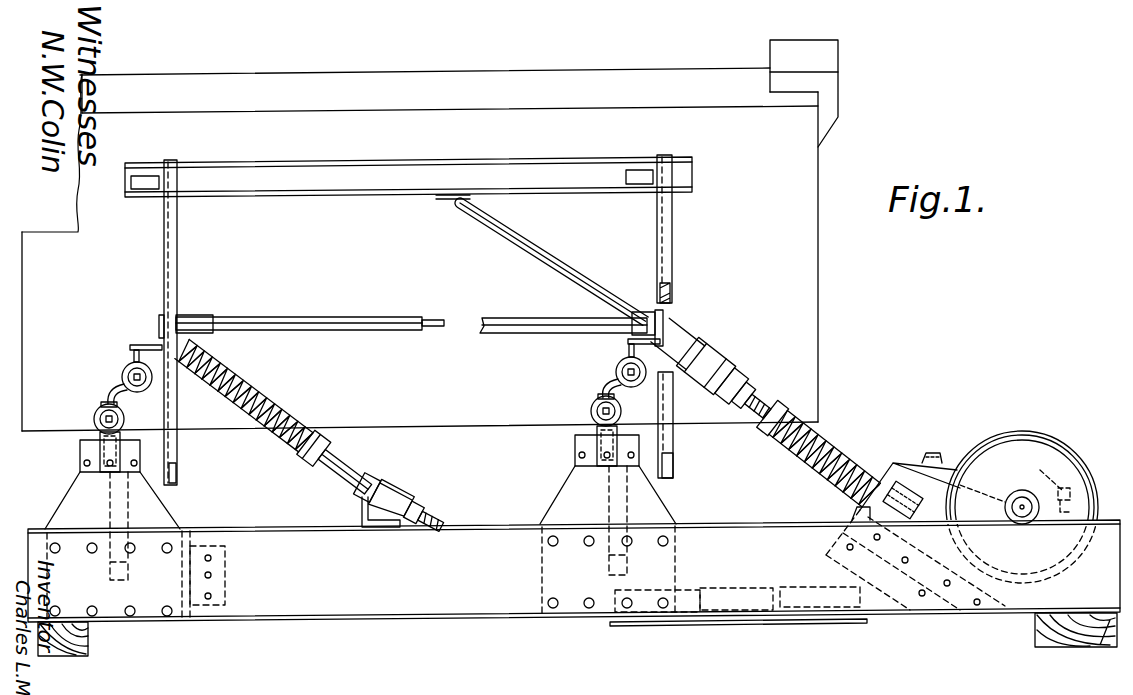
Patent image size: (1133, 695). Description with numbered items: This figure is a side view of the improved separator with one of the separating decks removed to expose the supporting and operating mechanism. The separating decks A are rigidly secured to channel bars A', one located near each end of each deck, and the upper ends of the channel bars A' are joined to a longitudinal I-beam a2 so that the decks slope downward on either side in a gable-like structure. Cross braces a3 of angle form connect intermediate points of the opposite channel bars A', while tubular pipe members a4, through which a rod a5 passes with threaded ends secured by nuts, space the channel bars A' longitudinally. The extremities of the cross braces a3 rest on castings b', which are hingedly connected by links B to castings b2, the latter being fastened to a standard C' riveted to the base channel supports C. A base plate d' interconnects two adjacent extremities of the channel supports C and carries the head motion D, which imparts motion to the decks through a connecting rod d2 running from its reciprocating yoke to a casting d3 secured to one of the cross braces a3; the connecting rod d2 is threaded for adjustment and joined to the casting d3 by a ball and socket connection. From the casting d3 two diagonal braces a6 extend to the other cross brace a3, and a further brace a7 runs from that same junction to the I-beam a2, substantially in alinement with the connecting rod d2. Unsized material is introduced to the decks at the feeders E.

The separating decks A is at (420, 249).
The feeders E is at (833, 49).
The longitudinal I-beam a2 is at (408, 178).
The channel bars A' is at (445, 320).
The cross braces a3 is at (160, 327).
The tubular pipe members a4 is at (318, 318).
The rod a5 is at (438, 318).
The diagonal braces a6 is at (520, 334).
The brace a7 is at (552, 262).
The castings b' is at (372, 348).
The links B is at (112, 383).
The castings b2 is at (97, 427).
The standard C' is at (360, 503).
The base channel supports C is at (574, 588).
The head motion D is at (960, 462).
The base plate d' is at (915, 553).
The connecting rod d2 is at (757, 388).
The casting d3 is at (687, 338).